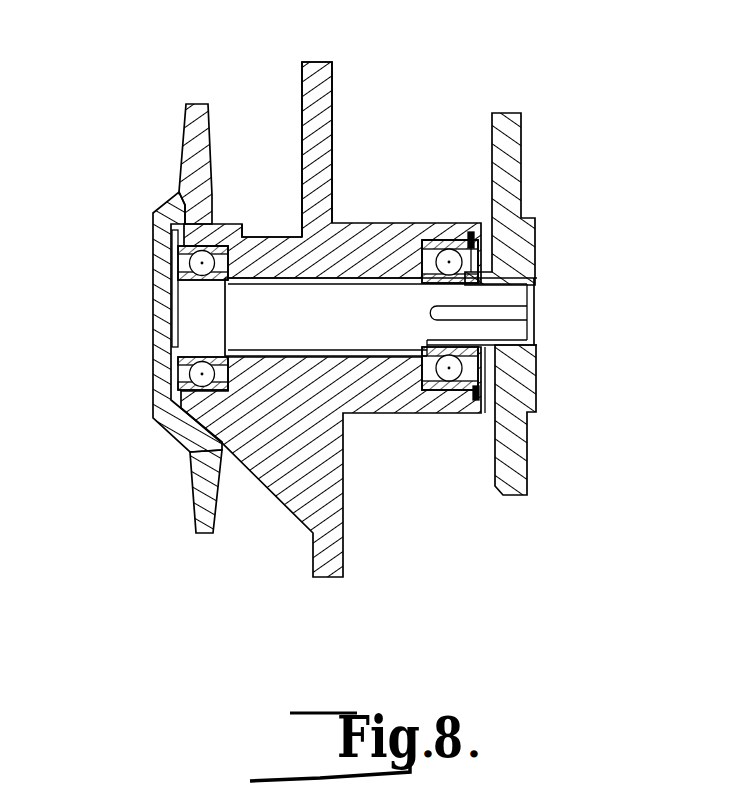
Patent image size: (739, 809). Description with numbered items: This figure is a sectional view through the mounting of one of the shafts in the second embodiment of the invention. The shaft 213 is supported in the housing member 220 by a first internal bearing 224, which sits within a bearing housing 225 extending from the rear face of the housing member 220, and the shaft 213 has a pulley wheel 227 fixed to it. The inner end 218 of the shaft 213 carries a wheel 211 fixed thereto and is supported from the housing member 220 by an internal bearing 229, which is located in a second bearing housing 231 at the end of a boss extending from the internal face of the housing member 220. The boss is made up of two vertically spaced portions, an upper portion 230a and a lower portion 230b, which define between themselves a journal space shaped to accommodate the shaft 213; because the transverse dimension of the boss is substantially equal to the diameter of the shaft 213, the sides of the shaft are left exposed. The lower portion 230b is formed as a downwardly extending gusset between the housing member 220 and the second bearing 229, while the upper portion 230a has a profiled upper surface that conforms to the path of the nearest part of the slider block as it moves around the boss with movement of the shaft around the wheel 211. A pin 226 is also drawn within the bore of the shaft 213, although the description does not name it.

The wheel 211 is at (183, 157).
The shaft 213 is at (387, 330).
The inner end 218 is at (202, 312).
The housing member 220 is at (337, 122).
The first internal bearing 224 is at (453, 245).
The bearing housing 225 is at (397, 228).
The pin 226 is at (518, 295).
The pulley wheel 227 is at (522, 155).
The internal bearing 229 is at (208, 248).
The upper portion 230a is at (277, 233).
The lower portion 230b is at (290, 465).
The bearing housing 231 is at (158, 230).